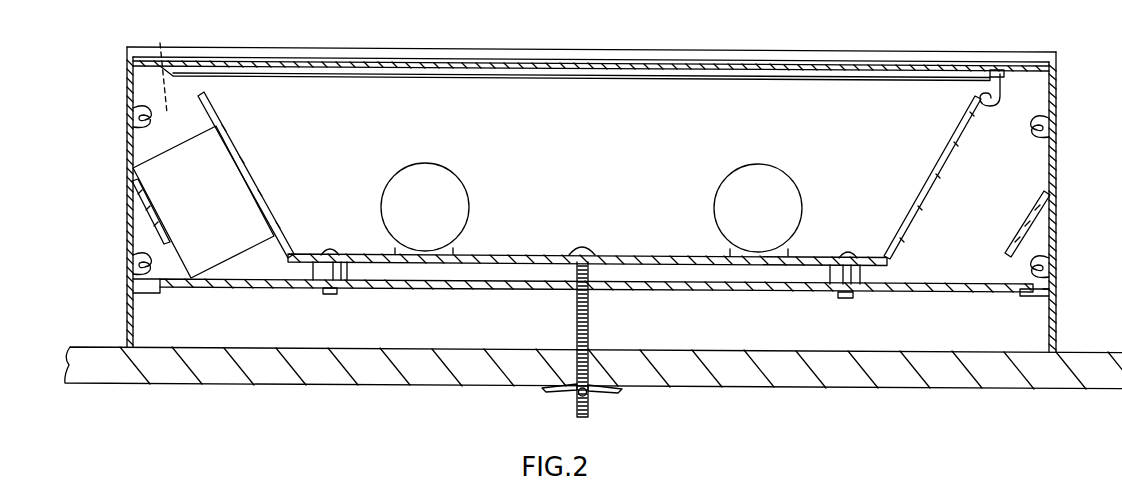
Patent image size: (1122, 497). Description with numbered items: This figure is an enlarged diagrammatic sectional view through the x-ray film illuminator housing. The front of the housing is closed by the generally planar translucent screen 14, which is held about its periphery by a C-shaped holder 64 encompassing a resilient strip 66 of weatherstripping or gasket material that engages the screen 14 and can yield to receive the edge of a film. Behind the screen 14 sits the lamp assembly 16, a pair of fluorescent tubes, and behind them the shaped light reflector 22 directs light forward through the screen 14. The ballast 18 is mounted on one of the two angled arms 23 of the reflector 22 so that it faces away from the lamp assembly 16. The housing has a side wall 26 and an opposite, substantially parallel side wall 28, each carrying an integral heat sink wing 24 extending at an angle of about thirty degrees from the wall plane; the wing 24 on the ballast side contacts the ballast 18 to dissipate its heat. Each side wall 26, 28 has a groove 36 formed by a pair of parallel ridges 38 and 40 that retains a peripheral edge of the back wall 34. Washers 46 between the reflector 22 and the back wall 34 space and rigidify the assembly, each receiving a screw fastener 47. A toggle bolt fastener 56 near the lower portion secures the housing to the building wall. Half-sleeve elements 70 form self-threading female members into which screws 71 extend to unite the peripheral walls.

The translucent screen 14 is at (685, 67).
The lamp assembly 16 is at (633, 203).
The ballast 18 is at (212, 256).
The light reflector 22 is at (723, 265).
The angled arm 23 is at (1000, 74).
The heat sink element 24 is at (152, 227).
The side wall 26 is at (1057, 148).
The side wall 28 is at (127, 151).
The back wall 34 is at (447, 286).
The groove 36 is at (1052, 291).
The ridge 38 is at (1042, 270).
The ridge 40 is at (1022, 297).
The washer 46 is at (345, 277).
The screw fastener 47 is at (333, 247).
The toggle bolt fastener 56 is at (576, 405).
The C-shaped holder 64 is at (350, 49).
The resilient strip 66 is at (591, 62).
The half-sleeve element 70 is at (128, 106).
The screw 71 is at (160, 42).